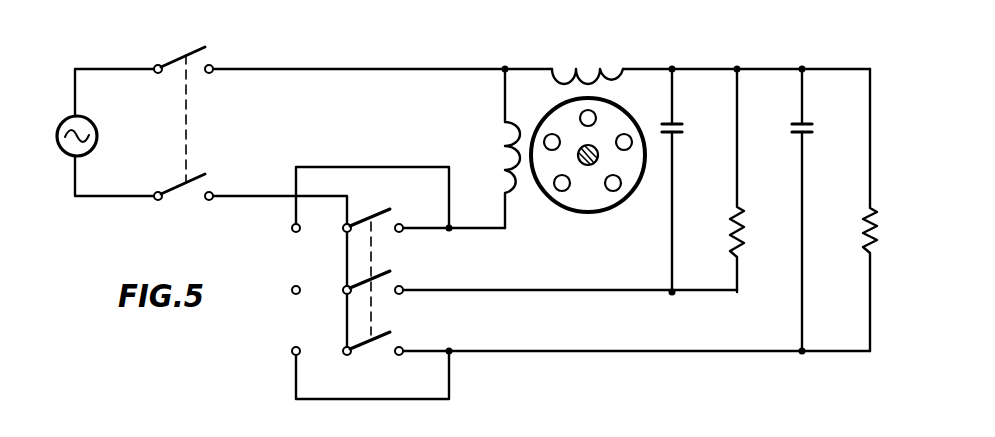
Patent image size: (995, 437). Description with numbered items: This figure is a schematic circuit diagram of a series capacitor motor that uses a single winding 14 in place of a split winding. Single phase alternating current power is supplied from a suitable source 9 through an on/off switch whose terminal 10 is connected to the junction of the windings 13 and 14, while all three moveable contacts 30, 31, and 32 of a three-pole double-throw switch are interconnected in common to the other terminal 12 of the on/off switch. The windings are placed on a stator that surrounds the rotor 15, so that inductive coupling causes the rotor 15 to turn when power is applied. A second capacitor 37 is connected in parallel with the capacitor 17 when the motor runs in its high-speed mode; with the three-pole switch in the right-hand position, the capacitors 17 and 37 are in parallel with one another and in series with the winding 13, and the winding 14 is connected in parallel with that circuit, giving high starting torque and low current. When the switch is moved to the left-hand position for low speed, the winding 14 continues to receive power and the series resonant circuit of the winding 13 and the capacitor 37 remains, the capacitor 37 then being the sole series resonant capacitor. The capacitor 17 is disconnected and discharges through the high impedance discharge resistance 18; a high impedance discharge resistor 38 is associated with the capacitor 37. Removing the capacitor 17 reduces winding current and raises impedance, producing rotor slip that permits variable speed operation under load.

The source 9 is at (62, 120).
The switch terminal 10 is at (173, 60).
The switch terminal 12 is at (180, 198).
The run winding 13 is at (592, 73).
The start winding 14 is at (505, 153).
The rotor 15 is at (612, 213).
The run capacitor 17 is at (683, 134).
The high impedance discharge resistance 18 is at (740, 216).
The moveable contact 30 is at (386, 207).
The moveable contact 31 is at (386, 270).
The moveable contact 32 is at (386, 331).
The second capacitor 37 is at (812, 134).
The high impedance discharge resistor 38 is at (868, 241).